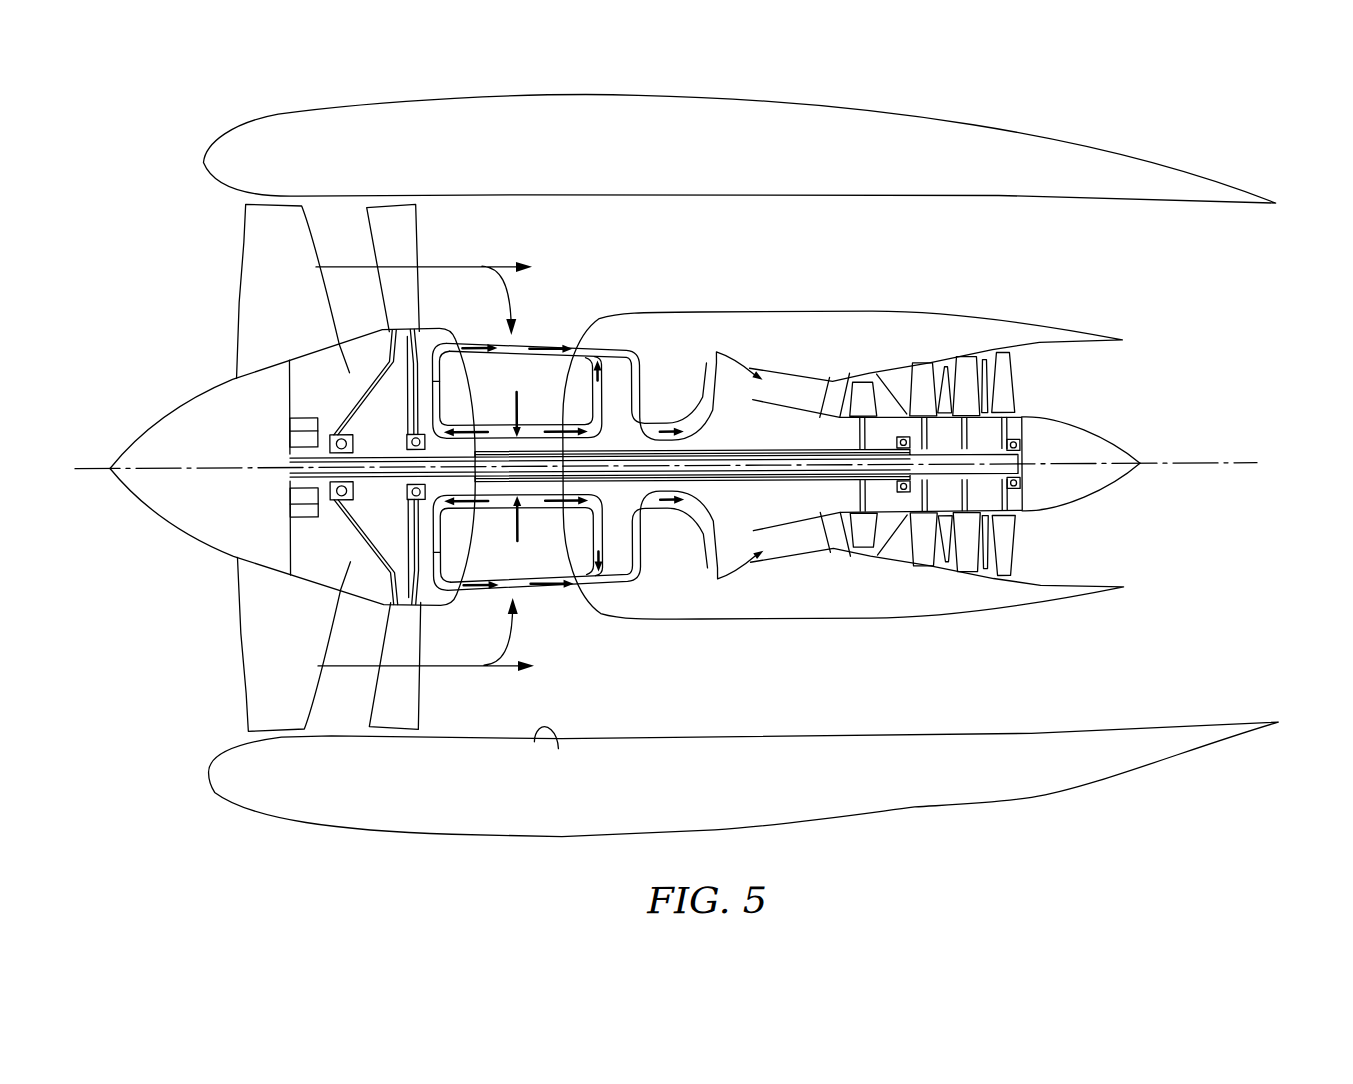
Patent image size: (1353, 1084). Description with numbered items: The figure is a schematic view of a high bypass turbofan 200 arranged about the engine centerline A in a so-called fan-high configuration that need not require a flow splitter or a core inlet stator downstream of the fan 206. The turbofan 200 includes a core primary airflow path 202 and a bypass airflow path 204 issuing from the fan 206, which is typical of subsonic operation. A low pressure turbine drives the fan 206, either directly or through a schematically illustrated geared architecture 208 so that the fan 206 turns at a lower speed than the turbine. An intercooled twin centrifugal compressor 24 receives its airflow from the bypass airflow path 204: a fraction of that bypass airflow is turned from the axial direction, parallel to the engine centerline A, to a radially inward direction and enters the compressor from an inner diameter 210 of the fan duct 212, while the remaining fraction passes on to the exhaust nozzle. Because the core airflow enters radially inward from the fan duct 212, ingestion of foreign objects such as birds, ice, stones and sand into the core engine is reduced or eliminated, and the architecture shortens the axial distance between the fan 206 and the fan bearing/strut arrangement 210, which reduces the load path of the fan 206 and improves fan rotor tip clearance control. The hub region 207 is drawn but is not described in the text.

The turbofan 200 is at (1270, 168).
The core primary airflow path 202 is at (1160, 406).
The bypass airflow path 204 is at (1125, 275).
The fan 206 is at (233, 682).
The fan hub 207 is at (333, 500).
The geared architecture 208 is at (312, 441).
The inner diameter of fan duct 210 is at (393, 415).
The fan duct 212 is at (557, 748).
The intercooled twin centrifugal compressor 24 is at (597, 650).
The engine centerline A is at (1220, 466).